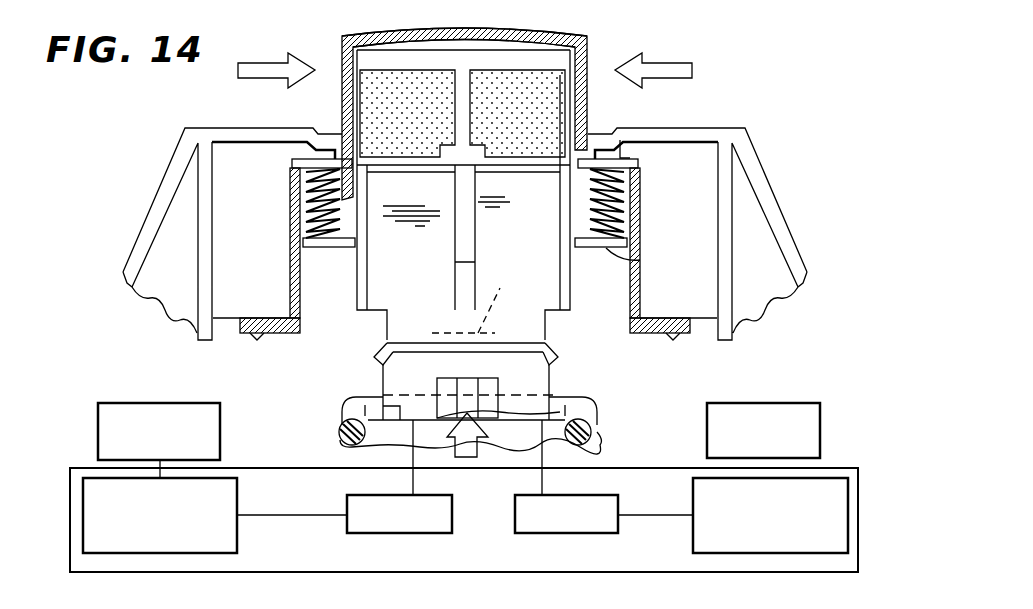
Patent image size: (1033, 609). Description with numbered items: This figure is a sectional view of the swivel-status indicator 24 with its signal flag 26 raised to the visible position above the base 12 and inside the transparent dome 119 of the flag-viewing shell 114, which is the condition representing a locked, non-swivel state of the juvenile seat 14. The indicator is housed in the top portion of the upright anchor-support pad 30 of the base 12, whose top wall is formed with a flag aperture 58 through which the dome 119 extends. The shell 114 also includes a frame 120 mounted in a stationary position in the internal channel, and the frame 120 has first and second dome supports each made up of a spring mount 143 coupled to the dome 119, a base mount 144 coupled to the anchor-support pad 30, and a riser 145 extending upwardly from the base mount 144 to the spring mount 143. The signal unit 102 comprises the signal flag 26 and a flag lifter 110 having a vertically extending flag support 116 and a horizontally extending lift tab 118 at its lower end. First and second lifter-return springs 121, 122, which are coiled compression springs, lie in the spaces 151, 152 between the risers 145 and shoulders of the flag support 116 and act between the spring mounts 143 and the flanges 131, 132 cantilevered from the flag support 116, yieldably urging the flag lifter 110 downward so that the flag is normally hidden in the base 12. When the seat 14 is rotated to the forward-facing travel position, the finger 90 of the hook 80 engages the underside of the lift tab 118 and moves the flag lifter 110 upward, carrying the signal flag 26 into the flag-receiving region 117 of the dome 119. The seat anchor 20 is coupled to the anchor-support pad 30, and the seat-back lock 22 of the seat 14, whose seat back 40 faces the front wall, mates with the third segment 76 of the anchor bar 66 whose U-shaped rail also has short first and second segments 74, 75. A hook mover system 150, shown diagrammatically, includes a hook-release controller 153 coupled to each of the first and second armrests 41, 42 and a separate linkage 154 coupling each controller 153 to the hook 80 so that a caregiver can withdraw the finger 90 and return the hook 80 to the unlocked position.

The base 12 is at (161, 161).
The juvenile seat 14 is at (606, 449).
The seat anchor 20 is at (591, 395).
The seat-back lock 22 is at (553, 343).
The swivel-status indicator 24 is at (655, 112).
The signal flag 26 is at (380, 86).
The upright anchor-support pad 30 is at (136, 223).
The seat back 40 is at (527, 437).
The first armrest 41 is at (706, 429).
The second armrest 42 is at (221, 421).
The flag aperture 58 is at (358, 148).
The anchor bar 66 is at (338, 393).
The first segment 74 is at (592, 431).
The second segment 75 is at (339, 433).
The third segment 76 is at (565, 396).
The hook 80 is at (441, 390).
The finger 90 is at (509, 356).
The signal unit 102 is at (380, 348).
The flag lifter 110 is at (586, 283).
The flag-viewing shell 114 is at (597, 38).
The flag support 116 is at (573, 290).
The flag-receiving region 117 is at (480, 46).
The lift tab 118 is at (483, 302).
The dome 119 is at (436, 34).
The frame 120 is at (643, 228).
The first lifter-return spring 121 is at (615, 205).
The second lifter-return spring 122 is at (338, 190).
The flange 131 is at (642, 260).
The flange 132 is at (333, 248).
The spring mount 143 is at (302, 160).
The base mount 144 is at (248, 338).
The riser 145 is at (293, 267).
The hook mover system 150 is at (837, 465).
The space 151 is at (583, 211).
The space 152 is at (349, 220).
The hook-release controller 153 is at (242, 486).
The linkage 154 is at (346, 531).